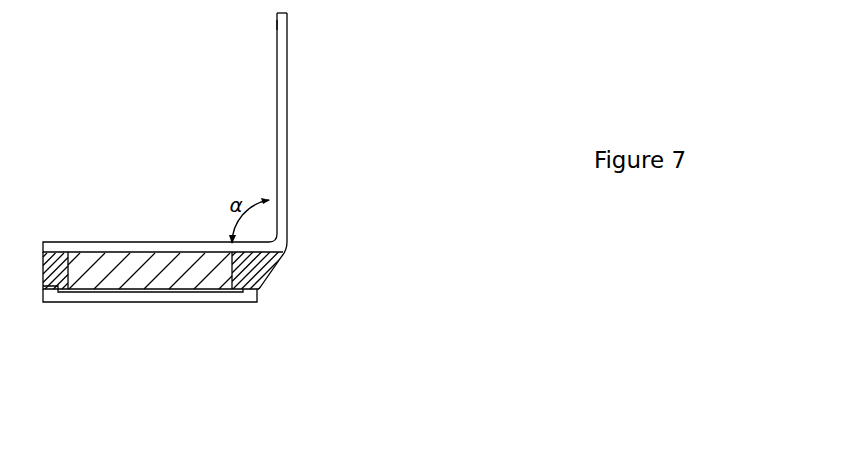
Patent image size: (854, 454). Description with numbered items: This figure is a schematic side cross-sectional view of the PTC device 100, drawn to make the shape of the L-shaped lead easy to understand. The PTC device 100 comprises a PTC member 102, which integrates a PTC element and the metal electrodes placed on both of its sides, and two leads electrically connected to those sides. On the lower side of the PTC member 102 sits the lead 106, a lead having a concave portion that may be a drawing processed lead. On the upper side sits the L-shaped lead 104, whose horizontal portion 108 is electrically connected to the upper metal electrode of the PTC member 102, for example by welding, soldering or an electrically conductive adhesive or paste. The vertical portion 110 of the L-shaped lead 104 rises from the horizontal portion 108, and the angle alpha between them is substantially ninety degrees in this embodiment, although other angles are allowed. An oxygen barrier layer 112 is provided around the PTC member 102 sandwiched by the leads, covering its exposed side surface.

The PTC device 100 is at (337, 138).
The PTC member 102 is at (164, 272).
The L-shaped lead 104 is at (181, 115).
The lead 106 is at (244, 300).
The horizontal portion 108 is at (158, 252).
The vertical portion 110 is at (277, 128).
The oxygen barrier layer 112 is at (262, 268).